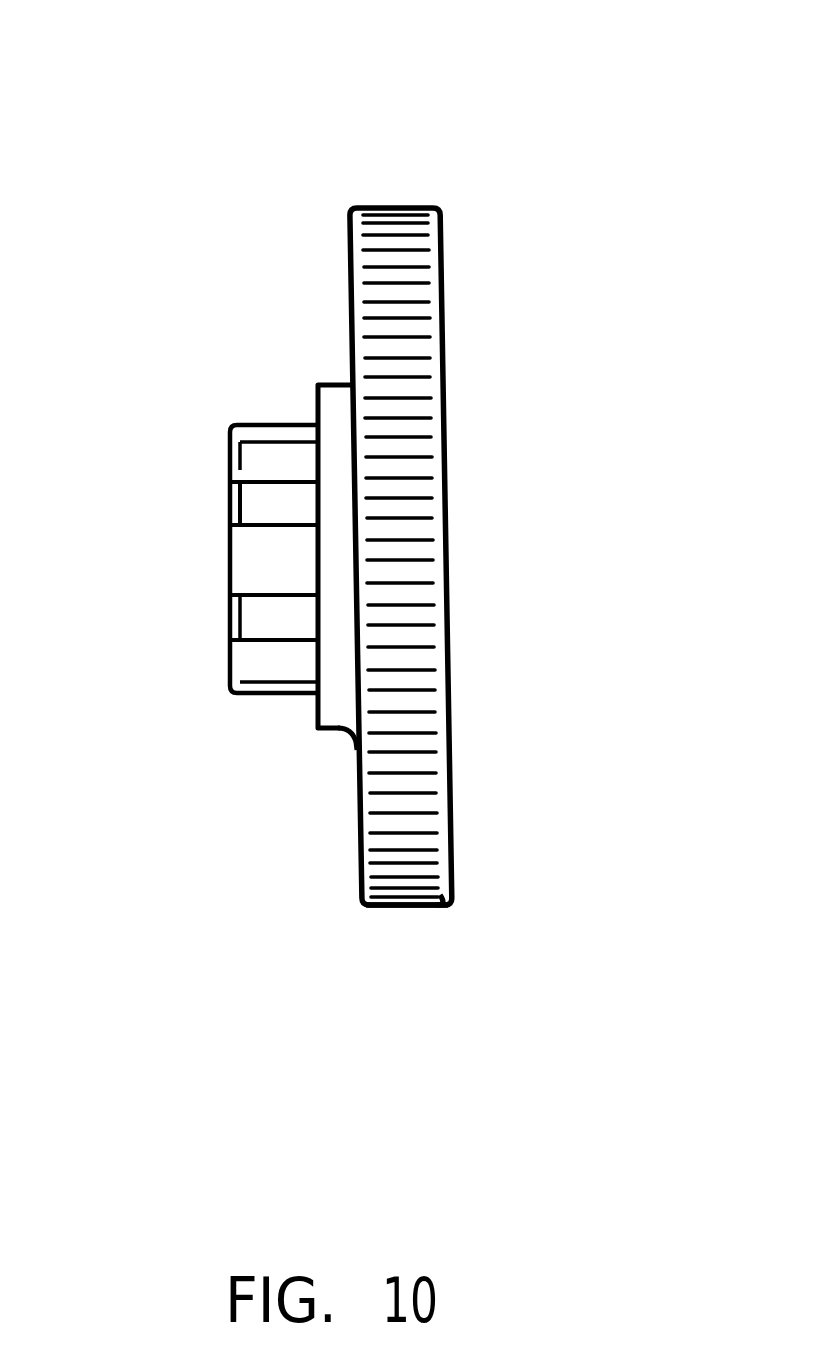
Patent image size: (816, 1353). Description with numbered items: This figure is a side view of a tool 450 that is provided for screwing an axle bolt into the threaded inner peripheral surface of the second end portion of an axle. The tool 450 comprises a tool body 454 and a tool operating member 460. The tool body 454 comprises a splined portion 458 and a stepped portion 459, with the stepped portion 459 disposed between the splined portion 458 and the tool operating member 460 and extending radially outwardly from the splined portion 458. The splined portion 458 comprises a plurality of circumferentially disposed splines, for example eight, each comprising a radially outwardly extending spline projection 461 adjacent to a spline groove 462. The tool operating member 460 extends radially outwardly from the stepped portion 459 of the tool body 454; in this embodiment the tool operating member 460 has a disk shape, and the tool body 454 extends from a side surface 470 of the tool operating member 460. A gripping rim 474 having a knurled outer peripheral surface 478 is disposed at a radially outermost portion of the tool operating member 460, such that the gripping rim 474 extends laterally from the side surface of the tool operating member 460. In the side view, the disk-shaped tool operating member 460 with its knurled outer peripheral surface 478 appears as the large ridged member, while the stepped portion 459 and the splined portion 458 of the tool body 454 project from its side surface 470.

The tool 450 is at (360, 524).
The tool body 454 is at (204, 588).
The splined portion 458 is at (258, 710).
The stepped portion 459 is at (337, 733).
The tool operating member 460 is at (377, 524).
The spline projection 461 is at (183, 534).
The spline groove 462 is at (273, 505).
The side surface 470 is at (350, 265).
The gripping rim 474 is at (395, 923).
The knurled outer peripheral surface 478 is at (430, 907).